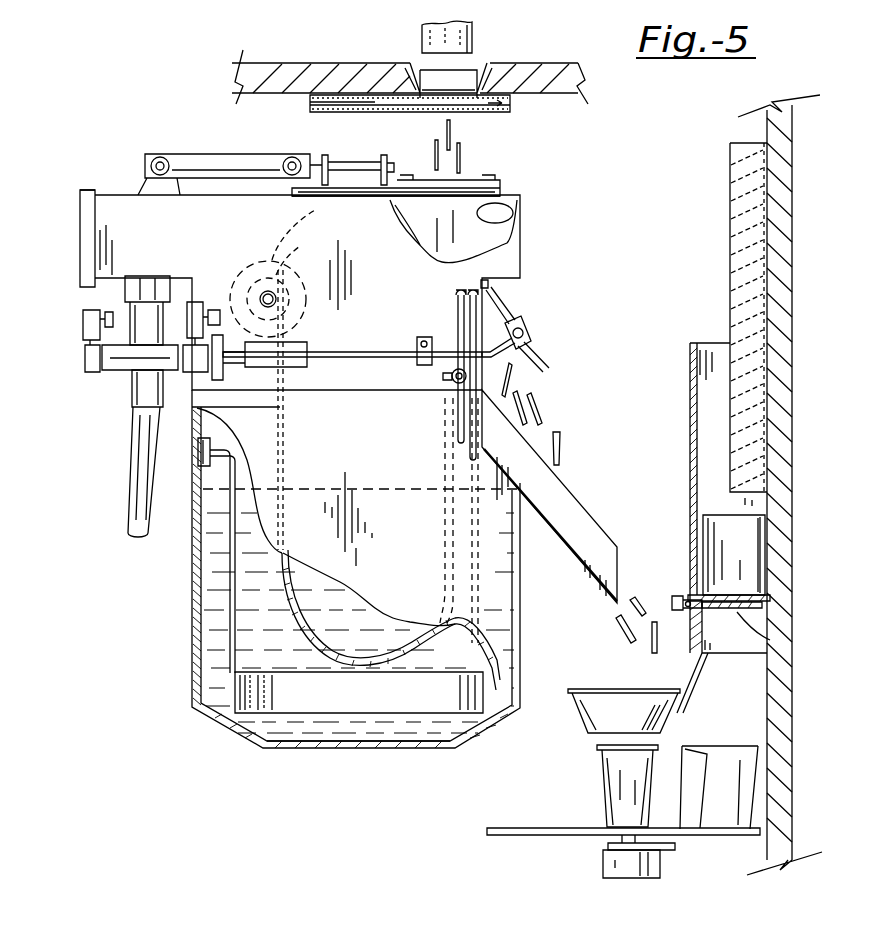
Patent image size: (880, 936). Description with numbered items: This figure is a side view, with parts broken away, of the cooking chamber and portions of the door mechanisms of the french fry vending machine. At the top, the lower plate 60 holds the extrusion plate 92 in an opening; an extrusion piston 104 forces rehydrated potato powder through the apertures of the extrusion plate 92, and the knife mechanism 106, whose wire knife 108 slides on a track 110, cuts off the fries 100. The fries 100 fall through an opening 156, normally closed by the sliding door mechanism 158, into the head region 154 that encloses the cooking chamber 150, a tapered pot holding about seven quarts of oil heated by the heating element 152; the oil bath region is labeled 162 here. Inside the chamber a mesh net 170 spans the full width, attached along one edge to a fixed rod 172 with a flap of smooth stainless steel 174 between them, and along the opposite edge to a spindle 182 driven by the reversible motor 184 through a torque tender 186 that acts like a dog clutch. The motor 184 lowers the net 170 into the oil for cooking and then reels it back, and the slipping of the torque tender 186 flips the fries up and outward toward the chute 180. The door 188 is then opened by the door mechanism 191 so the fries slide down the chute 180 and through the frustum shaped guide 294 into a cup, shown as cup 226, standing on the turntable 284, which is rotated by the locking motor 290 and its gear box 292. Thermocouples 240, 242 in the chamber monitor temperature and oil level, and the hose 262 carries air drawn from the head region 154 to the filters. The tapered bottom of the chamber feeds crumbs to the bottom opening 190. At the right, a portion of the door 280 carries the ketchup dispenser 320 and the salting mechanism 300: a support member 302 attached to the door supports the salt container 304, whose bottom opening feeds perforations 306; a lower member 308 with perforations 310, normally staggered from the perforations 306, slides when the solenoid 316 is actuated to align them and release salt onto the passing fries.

The lower plate 60 is at (285, 66).
The extrusion piston 104 is at (472, 40).
The extrusion plate 92 is at (485, 68).
The wire knife 108 is at (511, 103).
The track 110 is at (312, 104).
The knife mechanism 106 is at (378, 129).
The fries 100 is at (462, 163).
The head region 154 is at (190, 242).
The opening 156 is at (510, 218).
The sliding door mechanism 158 is at (290, 210).
The reversible motor 184 is at (313, 212).
The torque tender 186 is at (292, 240).
The spindle 182 is at (260, 297).
The thermocouple 240 is at (458, 335).
The thermocouple 242 is at (457, 337).
The door 188 is at (537, 353).
The fixed rod 172 is at (452, 378).
The flap of smooth stainless steel 174 is at (437, 405).
The mesh net 170 is at (290, 471).
The chute 180 is at (577, 495).
The door mechanism 191 is at (108, 372).
The hose 262 is at (128, 512).
The liquid 162 is at (382, 566).
The heating element 152 is at (237, 700).
The bottom opening 190 is at (333, 748).
The cooking chamber 150 is at (438, 759).
The door 280 is at (802, 316).
The ketchup dispenser 320 is at (722, 312).
The salting mechanism 300 is at (728, 590).
The salt container 304 is at (734, 555).
The perforations 306 is at (776, 562).
The support member 302 is at (765, 587).
The lower member 308 is at (737, 610).
The perforations 310 is at (737, 612).
The solenoid 316 is at (673, 599).
The frustum shaped guide 294 is at (578, 718).
The cup 226 is at (693, 747).
The turntable 284 is at (512, 838).
The gear box 292 is at (677, 853).
The locking motor 290 is at (662, 873).